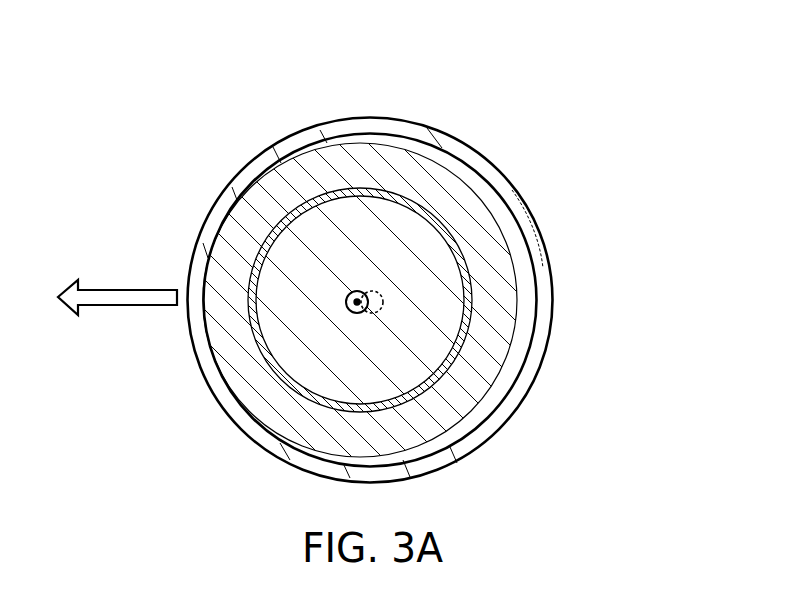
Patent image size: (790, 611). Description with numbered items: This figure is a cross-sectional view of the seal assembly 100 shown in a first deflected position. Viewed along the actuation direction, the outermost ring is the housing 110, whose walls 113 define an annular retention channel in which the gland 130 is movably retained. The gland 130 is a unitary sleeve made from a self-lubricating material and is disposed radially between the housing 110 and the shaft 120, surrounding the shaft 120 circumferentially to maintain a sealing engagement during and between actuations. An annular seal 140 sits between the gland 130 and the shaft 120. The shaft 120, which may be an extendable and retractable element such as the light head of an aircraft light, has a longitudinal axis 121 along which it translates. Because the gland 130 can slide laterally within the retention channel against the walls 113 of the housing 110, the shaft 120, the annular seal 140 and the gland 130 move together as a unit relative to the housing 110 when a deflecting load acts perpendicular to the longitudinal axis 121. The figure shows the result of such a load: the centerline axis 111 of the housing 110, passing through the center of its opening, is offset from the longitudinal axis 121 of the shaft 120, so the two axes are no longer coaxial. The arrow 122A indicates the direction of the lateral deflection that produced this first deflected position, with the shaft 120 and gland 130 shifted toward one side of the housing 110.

The seal assembly 100 is at (149, 64).
The housing 110 is at (540, 262).
The centerline axis 111 is at (383, 293).
The walls 113 is at (533, 292).
The shaft 120 is at (298, 358).
The longitudinal axis 121 is at (352, 291).
The offset direction 122A is at (113, 298).
The gland 130 is at (460, 408).
The annular seal 140 is at (473, 356).